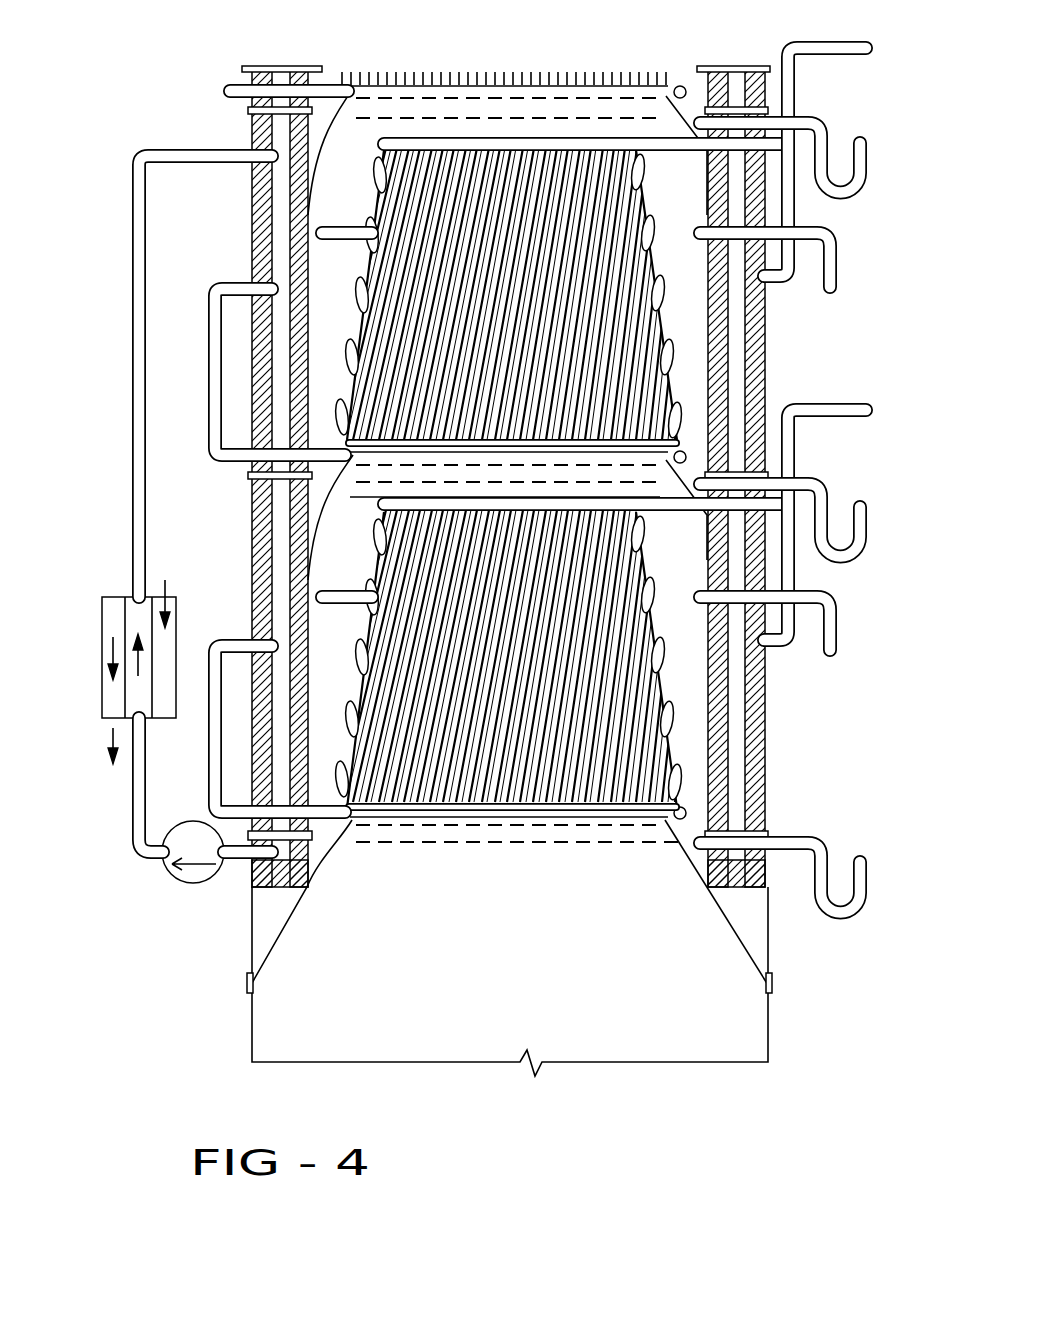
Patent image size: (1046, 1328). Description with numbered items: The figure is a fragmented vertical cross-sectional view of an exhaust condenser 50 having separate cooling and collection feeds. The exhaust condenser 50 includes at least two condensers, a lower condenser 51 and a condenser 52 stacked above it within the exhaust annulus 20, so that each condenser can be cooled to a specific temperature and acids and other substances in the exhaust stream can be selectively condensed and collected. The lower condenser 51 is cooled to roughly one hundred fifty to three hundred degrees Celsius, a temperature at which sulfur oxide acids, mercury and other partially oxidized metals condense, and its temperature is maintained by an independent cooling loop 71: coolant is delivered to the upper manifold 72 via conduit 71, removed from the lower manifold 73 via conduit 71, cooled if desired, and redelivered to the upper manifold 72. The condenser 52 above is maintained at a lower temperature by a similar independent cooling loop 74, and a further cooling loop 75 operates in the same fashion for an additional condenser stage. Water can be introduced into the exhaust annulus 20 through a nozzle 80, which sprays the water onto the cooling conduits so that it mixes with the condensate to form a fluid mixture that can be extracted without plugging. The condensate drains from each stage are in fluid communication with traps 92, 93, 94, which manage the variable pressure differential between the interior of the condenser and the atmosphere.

The exhaust annulus 20 is at (509, 948).
The exhaust condenser 50 is at (144, 969).
The lower condenser 51 is at (440, 690).
The condenser 52 is at (474, 185).
The cooling loop 71 is at (212, 796).
The upper manifold 72 is at (405, 493).
The lower manifold 73 is at (540, 818).
The cooling loop 74 is at (205, 345).
The cooling loop 75 is at (242, 88).
The nozzle 80 is at (337, 227).
The trap 92 is at (836, 900).
The trap 93 is at (833, 540).
The trap 94 is at (833, 170).